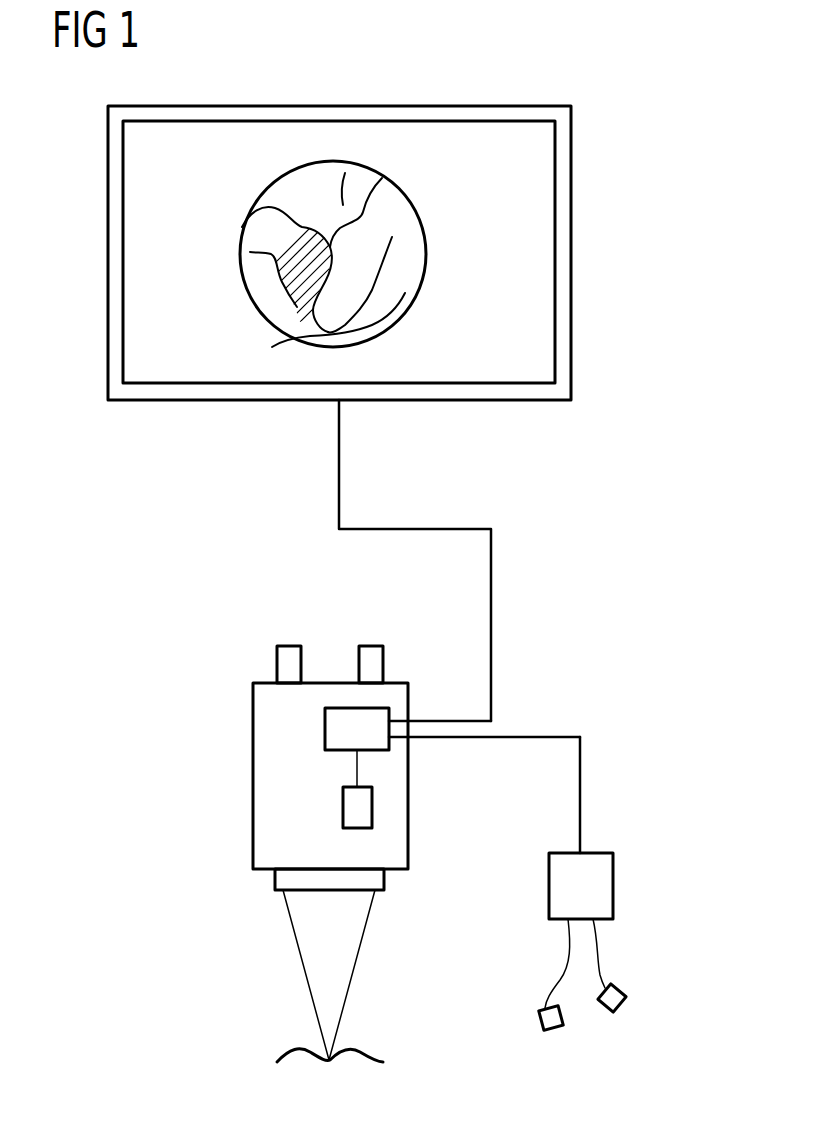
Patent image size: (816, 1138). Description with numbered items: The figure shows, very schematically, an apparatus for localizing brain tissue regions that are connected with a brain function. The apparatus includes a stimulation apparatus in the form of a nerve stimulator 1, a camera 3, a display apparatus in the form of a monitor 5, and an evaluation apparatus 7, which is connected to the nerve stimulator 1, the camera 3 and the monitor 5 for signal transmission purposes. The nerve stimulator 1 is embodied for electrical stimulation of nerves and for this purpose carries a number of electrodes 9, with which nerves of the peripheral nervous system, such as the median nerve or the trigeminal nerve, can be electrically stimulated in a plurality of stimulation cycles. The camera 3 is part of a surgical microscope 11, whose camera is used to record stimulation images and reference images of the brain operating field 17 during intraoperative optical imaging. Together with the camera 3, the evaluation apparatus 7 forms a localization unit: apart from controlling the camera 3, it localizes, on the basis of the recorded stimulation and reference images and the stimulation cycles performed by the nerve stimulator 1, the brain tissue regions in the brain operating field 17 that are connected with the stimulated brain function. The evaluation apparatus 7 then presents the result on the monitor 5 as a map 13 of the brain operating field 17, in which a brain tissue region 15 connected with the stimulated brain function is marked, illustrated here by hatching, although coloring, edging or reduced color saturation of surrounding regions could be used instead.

The nerve stimulator 1 is at (549, 882).
The camera 3 is at (372, 805).
The monitor 5 is at (555, 253).
The evaluation apparatus 7 is at (375, 708).
The electrodes 9 is at (537, 1025).
The surgical microscope 11 is at (253, 772).
The map 13 is at (331, 162).
The brain tissue region 15 is at (303, 262).
The brain operating field 17 is at (303, 1052).